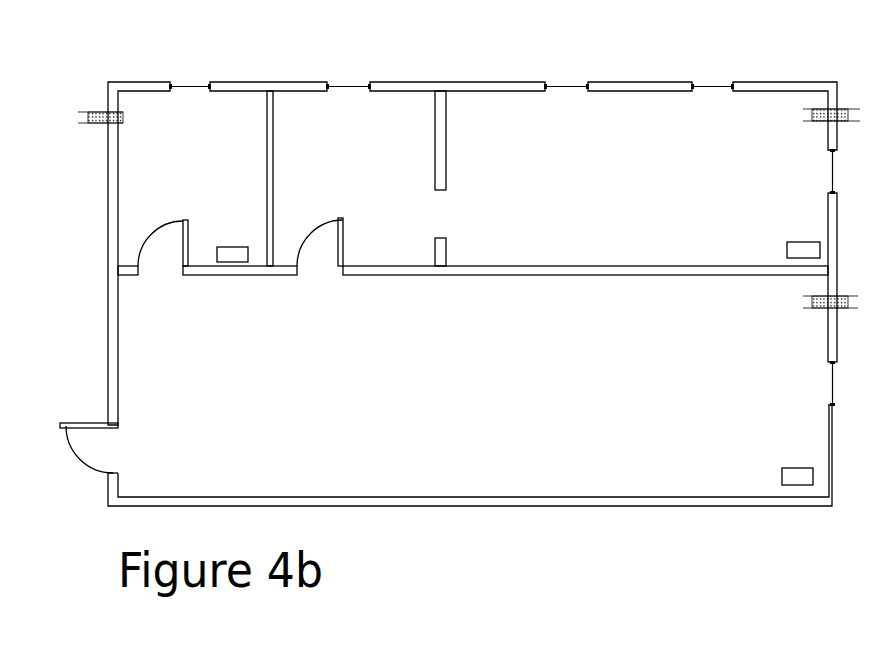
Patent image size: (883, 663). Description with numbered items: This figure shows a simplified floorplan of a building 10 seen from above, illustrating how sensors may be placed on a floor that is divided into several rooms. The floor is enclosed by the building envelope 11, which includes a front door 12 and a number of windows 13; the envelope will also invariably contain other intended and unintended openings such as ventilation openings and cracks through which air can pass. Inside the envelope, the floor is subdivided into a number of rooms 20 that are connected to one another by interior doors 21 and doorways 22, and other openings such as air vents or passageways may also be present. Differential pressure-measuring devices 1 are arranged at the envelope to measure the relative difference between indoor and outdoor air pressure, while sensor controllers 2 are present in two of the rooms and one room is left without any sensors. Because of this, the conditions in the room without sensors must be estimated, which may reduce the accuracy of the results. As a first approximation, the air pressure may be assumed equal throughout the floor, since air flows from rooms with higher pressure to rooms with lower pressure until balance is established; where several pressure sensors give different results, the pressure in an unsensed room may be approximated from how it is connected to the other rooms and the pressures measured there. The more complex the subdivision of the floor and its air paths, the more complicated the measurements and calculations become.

The building 10 is at (296, 58).
The differential pressure-measuring device 1 is at (461, 204).
The sensor controller 2 is at (515, 353).
The building envelope 11 is at (493, 80).
The front door 12 is at (106, 448).
The window 13 is at (502, 233).
The room 20 is at (473, 246).
The interior door 21 is at (240, 250).
The doorway 22 is at (443, 236).